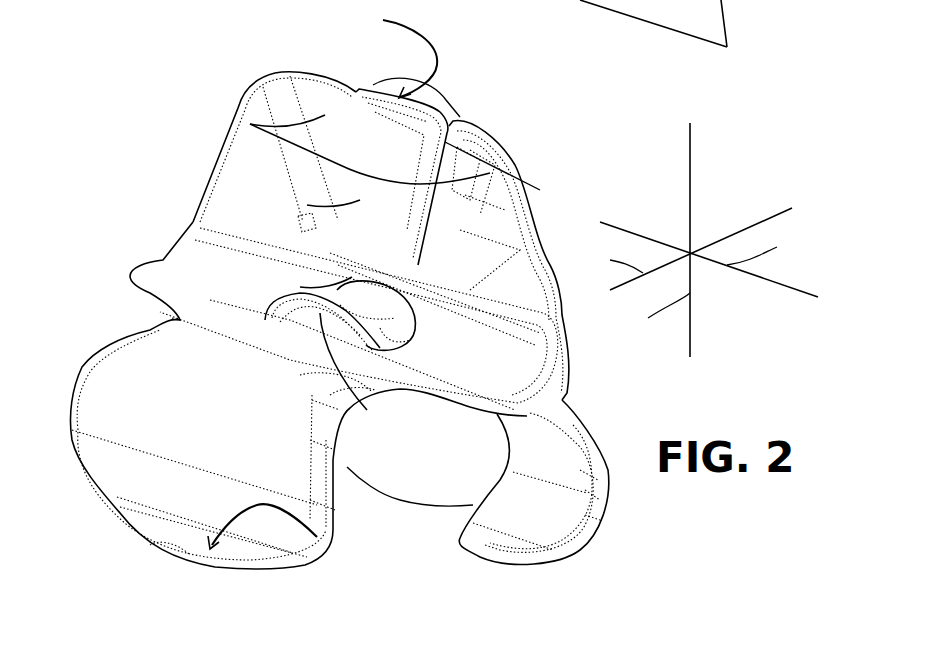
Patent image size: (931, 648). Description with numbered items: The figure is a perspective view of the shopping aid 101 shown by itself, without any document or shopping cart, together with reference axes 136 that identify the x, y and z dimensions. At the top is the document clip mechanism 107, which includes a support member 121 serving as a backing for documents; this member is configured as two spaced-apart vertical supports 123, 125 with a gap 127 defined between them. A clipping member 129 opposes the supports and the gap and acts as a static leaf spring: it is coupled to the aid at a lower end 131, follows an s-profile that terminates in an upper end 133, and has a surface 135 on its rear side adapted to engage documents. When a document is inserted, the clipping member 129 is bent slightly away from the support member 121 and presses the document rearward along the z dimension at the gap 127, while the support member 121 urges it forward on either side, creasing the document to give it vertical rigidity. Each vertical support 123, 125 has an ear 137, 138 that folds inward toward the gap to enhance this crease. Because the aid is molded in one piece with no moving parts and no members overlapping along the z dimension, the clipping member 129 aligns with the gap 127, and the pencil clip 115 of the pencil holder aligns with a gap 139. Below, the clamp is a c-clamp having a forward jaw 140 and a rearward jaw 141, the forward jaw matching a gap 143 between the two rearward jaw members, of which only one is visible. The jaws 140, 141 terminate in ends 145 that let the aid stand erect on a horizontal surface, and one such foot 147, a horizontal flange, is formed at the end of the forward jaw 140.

The shopping aid 101 is at (170, 220).
The document clip mechanism 107 is at (490, 242).
The pencil clip 115 is at (350, 387).
The support member 121 is at (340, 165).
The vertical support 123 is at (272, 80).
The vertical support 125 is at (503, 150).
The gap 127 is at (430, 82).
The clipping member 129 is at (307, 205).
The lower end 131 is at (300, 287).
The upper end 133 is at (540, 190).
The surface 135 is at (390, 53).
The reference axes 136 is at (785, 208).
The ear 137 is at (288, 115).
The ear 138 is at (457, 147).
The gap 139 is at (373, 310).
The forward jaw 140 is at (137, 472).
The rearward jaw 141 is at (560, 510).
The gap 143 is at (392, 497).
The ends 145 is at (505, 548).
The foot 147 is at (300, 523).